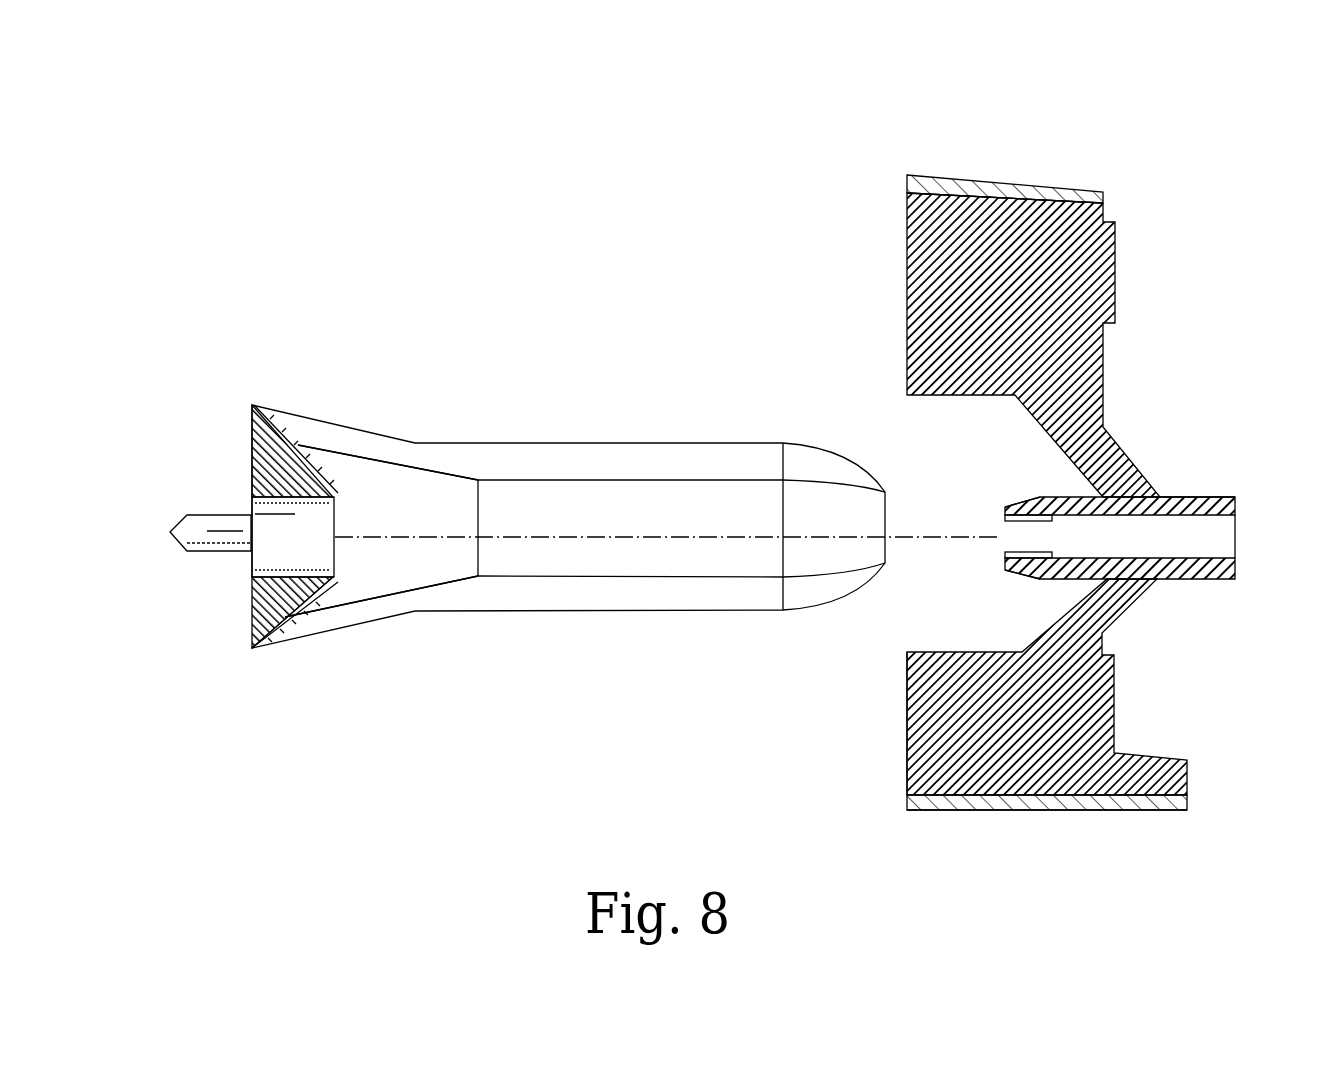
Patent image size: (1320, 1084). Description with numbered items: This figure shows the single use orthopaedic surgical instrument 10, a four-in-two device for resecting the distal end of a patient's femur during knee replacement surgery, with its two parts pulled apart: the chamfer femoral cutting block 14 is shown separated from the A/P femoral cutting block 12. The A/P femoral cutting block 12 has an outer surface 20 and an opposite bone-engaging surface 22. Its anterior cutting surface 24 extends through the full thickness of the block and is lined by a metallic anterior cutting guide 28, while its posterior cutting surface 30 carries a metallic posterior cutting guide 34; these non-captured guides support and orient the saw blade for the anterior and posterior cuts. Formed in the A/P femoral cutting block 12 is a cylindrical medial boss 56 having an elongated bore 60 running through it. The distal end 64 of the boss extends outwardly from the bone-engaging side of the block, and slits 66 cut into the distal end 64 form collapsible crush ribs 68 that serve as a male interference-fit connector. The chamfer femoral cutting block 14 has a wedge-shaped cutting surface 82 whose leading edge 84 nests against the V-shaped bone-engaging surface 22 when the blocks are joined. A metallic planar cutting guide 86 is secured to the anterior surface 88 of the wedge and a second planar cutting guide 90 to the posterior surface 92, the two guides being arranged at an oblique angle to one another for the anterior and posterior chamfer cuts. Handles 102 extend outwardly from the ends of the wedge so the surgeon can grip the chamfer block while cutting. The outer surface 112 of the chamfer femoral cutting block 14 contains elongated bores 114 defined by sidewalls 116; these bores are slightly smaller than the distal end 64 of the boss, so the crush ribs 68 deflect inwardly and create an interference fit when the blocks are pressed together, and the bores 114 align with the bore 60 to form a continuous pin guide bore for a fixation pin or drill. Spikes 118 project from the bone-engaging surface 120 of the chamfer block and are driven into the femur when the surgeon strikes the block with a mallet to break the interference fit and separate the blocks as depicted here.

The orthopaedic surgical instrument 10 is at (1188, 148).
The A/P femoral cutting block 12 is at (1116, 272).
The chamfer femoral cutting block 14 is at (740, 447).
The outer surface 20 is at (1115, 727).
The bone-engaging surface 22 is at (906, 730).
The anterior cutting surface 24 is at (1040, 192).
The anterior cutting guide 28 is at (975, 178).
The posterior cutting surface 30 is at (1030, 810).
The posterior cutting guide 34 is at (930, 810).
The medial boss 56 is at (1210, 497).
The elongated bore 60 is at (1235, 540).
The distal end 64 is at (1005, 568).
The slits 66 is at (1020, 522).
The crush ribs 68 is at (1005, 507).
The wedge-shaped cutting surface 82 is at (335, 489).
The leading edge 84 is at (340, 578).
The planar cutting guide 86 is at (287, 433).
The anterior surface 88 is at (330, 483).
The planar cutting guide 90 is at (275, 648).
The posterior surface 92 is at (325, 585).
The handles 102 is at (617, 448).
The outer surface 112 is at (340, 583).
The elongated bores 114 is at (250, 574).
The sidewalls 116 is at (326, 517).
The spikes 118 is at (180, 525).
The bone-engaging surface 120 is at (250, 432).